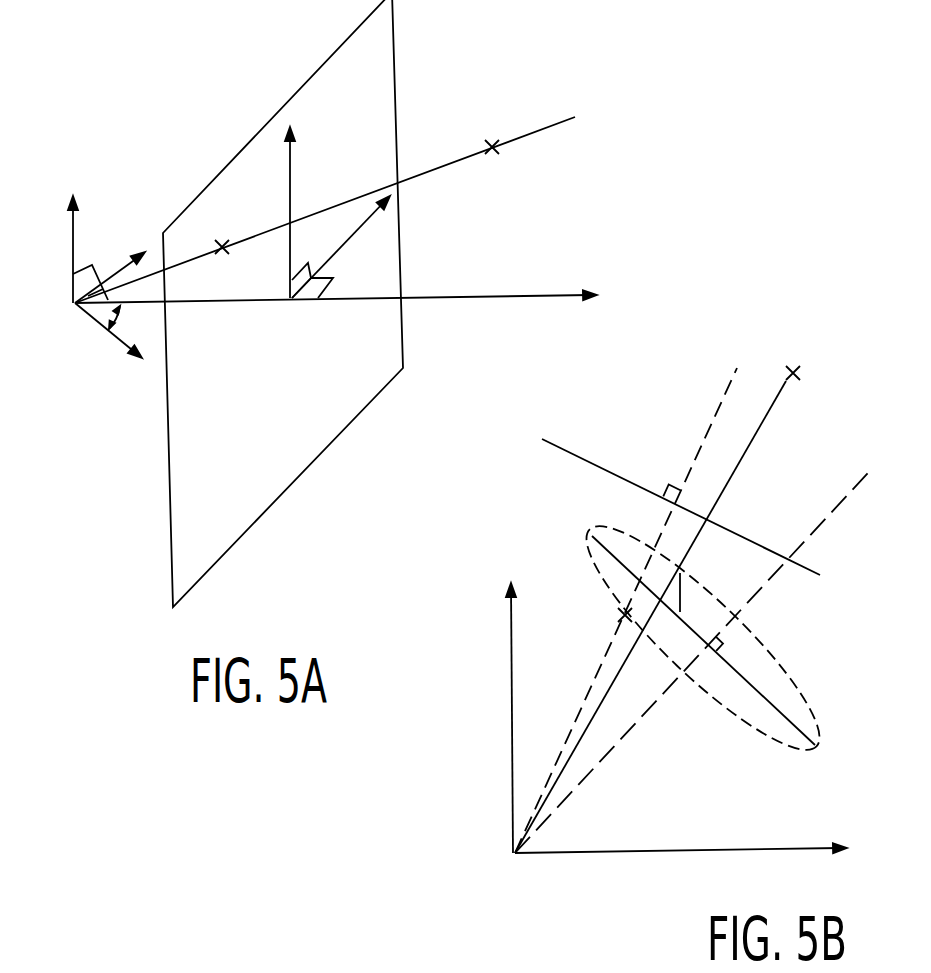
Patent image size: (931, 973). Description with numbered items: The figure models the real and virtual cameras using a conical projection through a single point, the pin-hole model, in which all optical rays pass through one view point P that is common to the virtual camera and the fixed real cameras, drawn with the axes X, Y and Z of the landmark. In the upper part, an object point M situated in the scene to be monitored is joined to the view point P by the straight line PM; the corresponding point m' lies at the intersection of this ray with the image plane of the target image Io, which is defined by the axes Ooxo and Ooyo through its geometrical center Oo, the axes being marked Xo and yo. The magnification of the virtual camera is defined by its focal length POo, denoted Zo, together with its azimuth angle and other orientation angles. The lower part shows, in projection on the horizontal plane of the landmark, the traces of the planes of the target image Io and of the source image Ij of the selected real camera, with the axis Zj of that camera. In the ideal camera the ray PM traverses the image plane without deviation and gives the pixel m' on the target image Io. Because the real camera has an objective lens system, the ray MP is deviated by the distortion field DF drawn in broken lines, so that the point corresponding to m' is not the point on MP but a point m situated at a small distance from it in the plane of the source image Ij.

In FIG. 5A, the target image Io is at (375, 85).
In FIG. 5B, the target image Io is at (588, 455).
In FIG. 5A, the view point P is at (76, 294).
In FIG. 5B, the view point P is at (510, 858).
In FIG. 5A, the Y axis Y is at (61, 244).
In FIG. 5B, the Y axis Y is at (517, 877).
In FIG. 5A, the X axis X is at (116, 251).
In FIG. 5B, the X axis X is at (500, 718).
In FIG. 5A, the Z axis Z is at (108, 345).
In FIG. 5B, the Z axis Z is at (681, 869).
In FIG. 5A, the focal length Zo is at (336, 277).
In FIG. 5B, the focal length Zo is at (626, 606).
In FIG. 5A, the geometrical center of the target image Oo is at (309, 304).
In FIG. 5A, the image plane axis Ooyo yo is at (305, 200).
In FIG. 5A, the image plane axis Ooxo Xo is at (366, 241).
In FIG. 5A, the object point M is at (325, 210).
In FIG. 5B, the object point M is at (670, 605).
In FIG. 5A, the corresponding image point m' is at (242, 254).
In FIG. 5B, the corresponding image point m' is at (755, 484).
In FIG. 5B, the axis Zj is at (694, 663).
In FIG. 5B, the distortion field DF is at (730, 707).
In FIG. 5B, the source image Ij is at (782, 708).
In FIG. 5B, the distorted source image point m is at (713, 581).